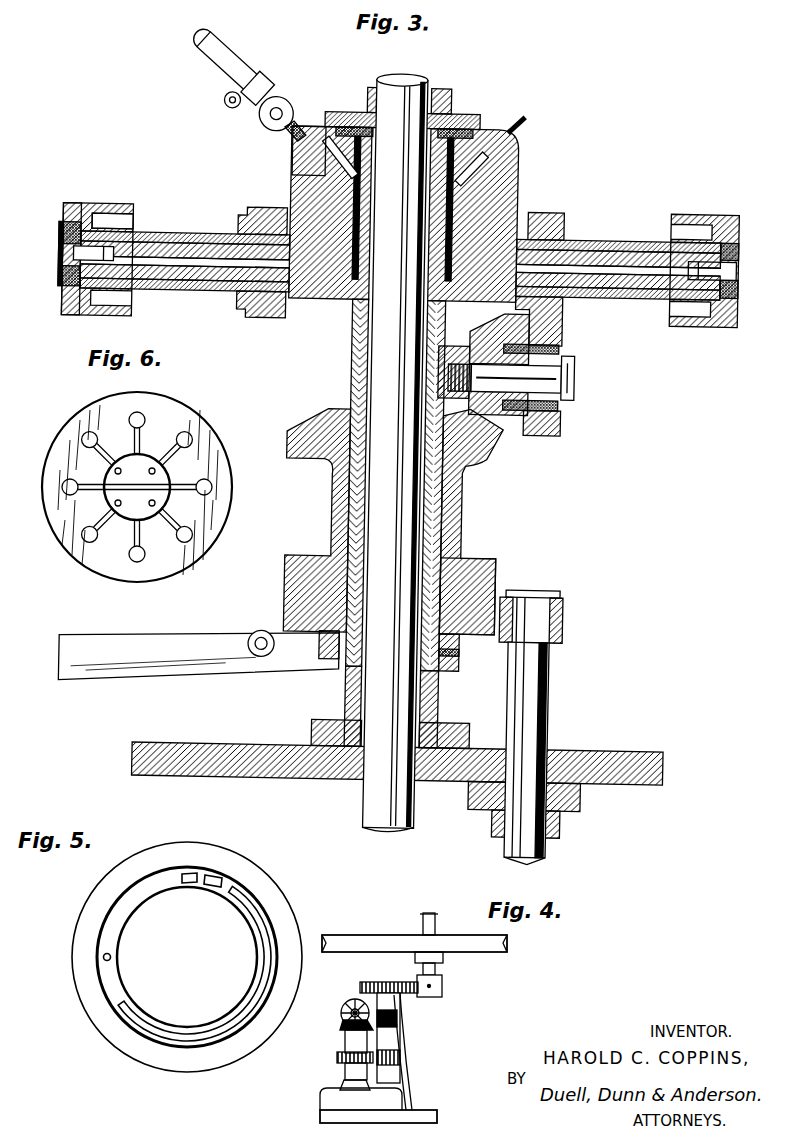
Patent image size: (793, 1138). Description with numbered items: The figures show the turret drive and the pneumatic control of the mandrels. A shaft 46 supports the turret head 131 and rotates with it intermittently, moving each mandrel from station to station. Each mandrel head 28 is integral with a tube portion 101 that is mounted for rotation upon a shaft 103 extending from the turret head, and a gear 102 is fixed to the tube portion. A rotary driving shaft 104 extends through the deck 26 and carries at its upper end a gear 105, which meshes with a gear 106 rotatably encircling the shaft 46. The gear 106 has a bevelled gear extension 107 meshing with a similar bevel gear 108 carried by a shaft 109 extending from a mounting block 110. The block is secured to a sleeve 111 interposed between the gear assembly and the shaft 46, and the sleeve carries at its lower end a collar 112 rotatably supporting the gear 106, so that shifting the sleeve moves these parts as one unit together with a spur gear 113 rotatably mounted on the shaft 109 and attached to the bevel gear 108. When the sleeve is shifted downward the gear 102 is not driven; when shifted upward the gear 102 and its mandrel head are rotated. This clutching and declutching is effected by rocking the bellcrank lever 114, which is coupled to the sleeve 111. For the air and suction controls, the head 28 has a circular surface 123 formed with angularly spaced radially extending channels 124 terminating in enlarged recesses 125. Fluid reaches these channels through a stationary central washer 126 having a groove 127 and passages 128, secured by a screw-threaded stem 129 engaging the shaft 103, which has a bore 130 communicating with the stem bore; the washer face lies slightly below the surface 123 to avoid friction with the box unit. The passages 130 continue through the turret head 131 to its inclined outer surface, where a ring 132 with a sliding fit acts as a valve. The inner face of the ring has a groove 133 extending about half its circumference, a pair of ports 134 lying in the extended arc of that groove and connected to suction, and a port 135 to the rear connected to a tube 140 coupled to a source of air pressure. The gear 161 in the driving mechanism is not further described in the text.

In FIG. 3, the deck 26 is at (618, 751).
In FIG. 3, the mandrel head 28 is at (80, 211).
In FIG. 3, the shaft 46 is at (372, 809).
In FIG. 3, the tube portion 101 is at (168, 237).
In FIG. 3, the gear 102 is at (240, 213).
In FIG. 3, the shaft 103 is at (157, 278).
In FIG. 3, the rotary driving shaft 104 is at (558, 837).
In FIG. 4, the rotary driving shaft 104 is at (435, 916).
In FIG. 3, the gear 105 is at (568, 607).
In FIG. 3, the gear 106 is at (480, 566).
In FIG. 3, the bevelled gear extension 107 is at (305, 434).
In FIG. 3, the bevel gear 108 is at (505, 428).
In FIG. 3, the shaft 109 is at (579, 370).
In FIG. 3, the mounting block 110 is at (450, 345).
In FIG. 3, the sleeve 111 is at (353, 501).
In FIG. 3, the collar 112 is at (459, 654).
In FIG. 3, the spur gear 113 is at (558, 420).
In FIG. 3, the bellcrank lever 114 is at (179, 639).
In FIG. 3, the circular surface 123 is at (58, 307).
In FIG. 6, the circular surface 123 is at (48, 462).
In FIG. 3, the radially extending channels 124 is at (59, 231).
In FIG. 6, the radially extending channels 124 is at (106, 445).
In FIG. 6, the enlarged recesses 125 is at (85, 437).
In FIG. 3, the central washer 126 is at (104, 211).
In FIG. 6, the central washer 126 is at (130, 510).
In FIG. 3, the groove 127 is at (57, 297).
In FIG. 6, the groove 127 is at (170, 487).
In FIG. 3, the passages 128 is at (59, 247).
In FIG. 6, the passages 128 is at (153, 468).
In FIG. 3, the screw-threaded stem 129 is at (64, 264).
In FIG. 3, the bore or conduit 130 is at (206, 266).
In FIG. 3, the turret head 131 is at (515, 186).
In FIG. 3, the ring 132 is at (514, 153).
In FIG. 5, the ring 132 is at (270, 890).
In FIG. 3, the groove 133 is at (477, 148).
In FIG. 5, the groove 133 is at (268, 948).
In FIG. 5, the ports or openings 134 is at (218, 884).
In FIG. 3, the opening or port 135 is at (284, 157).
In FIG. 5, the opening or port 135 is at (103, 954).
In FIG. 3, the tube 140 is at (230, 63).
In FIG. 4, the gear 161 is at (400, 1060).